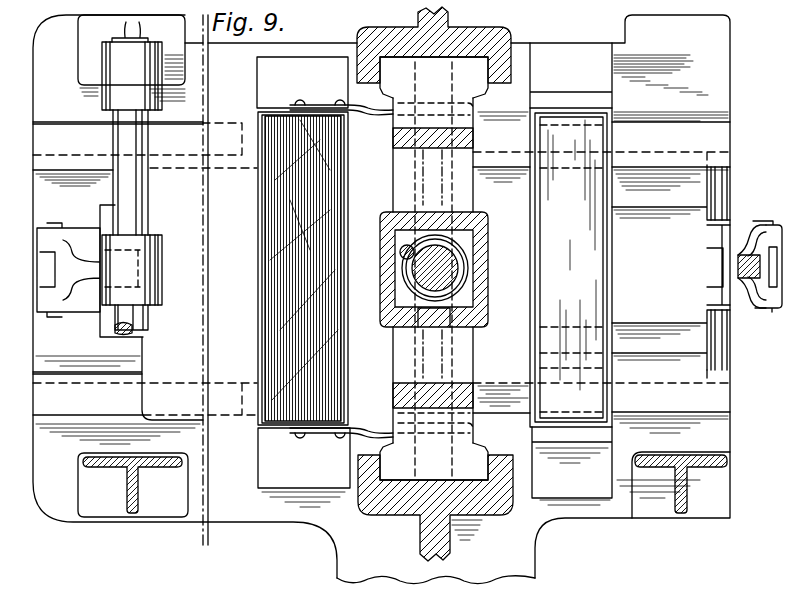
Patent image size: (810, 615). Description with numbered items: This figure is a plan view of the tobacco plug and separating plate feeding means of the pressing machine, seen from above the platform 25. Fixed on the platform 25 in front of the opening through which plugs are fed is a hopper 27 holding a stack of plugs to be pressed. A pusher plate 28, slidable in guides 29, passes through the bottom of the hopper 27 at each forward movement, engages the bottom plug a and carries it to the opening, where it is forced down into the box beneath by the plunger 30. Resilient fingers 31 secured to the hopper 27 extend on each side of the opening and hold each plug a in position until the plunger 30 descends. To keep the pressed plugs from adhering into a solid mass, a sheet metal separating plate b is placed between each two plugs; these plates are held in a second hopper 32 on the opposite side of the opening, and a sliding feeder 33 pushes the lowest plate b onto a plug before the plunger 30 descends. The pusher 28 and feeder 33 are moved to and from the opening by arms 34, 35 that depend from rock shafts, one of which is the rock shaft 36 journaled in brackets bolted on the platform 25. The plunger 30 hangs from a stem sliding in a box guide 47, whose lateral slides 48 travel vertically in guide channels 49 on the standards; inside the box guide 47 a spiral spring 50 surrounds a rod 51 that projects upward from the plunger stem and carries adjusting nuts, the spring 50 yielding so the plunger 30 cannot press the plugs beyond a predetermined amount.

The platform 25 is at (223, 280).
The hopper 27 is at (258, 306).
The pusher plate 28 is at (284, 299).
The guides 29 is at (118, 270).
The plunger 30 is at (400, 360).
The resilient fingers 31 is at (372, 113).
The hopper 32 is at (610, 272).
The sliding feeder 33 is at (469, 296).
The arm 34 is at (90, 262).
The arm 35 is at (750, 255).
The rock shaft 36 is at (123, 188).
The box guide 47 is at (386, 212).
The slides 48 is at (477, 465).
The guide channels 49 is at (470, 522).
The spiral spring 50 is at (413, 290).
The rod 51 is at (410, 268).
The plug a is at (283, 226).
The separating plate b is at (572, 255).